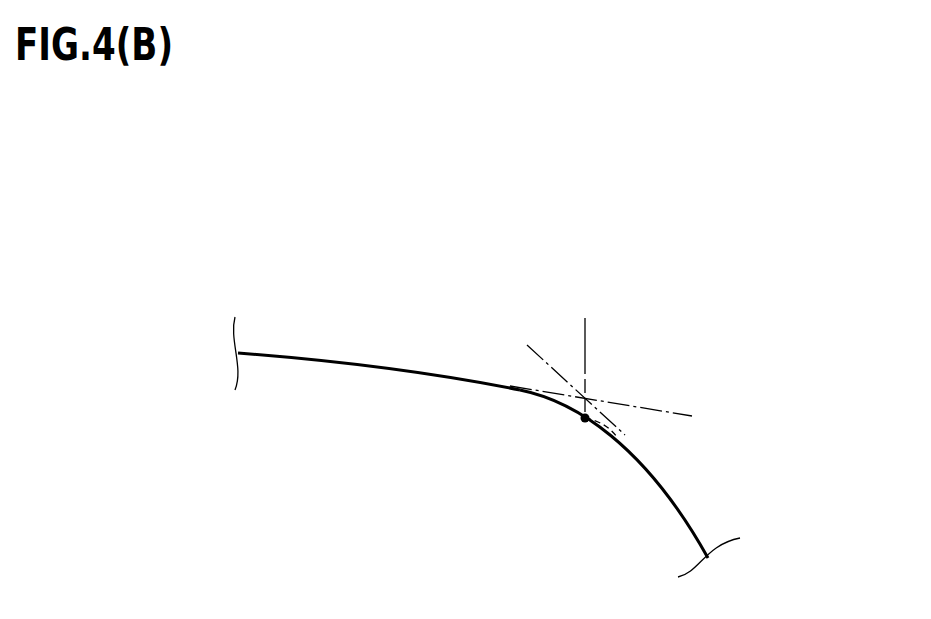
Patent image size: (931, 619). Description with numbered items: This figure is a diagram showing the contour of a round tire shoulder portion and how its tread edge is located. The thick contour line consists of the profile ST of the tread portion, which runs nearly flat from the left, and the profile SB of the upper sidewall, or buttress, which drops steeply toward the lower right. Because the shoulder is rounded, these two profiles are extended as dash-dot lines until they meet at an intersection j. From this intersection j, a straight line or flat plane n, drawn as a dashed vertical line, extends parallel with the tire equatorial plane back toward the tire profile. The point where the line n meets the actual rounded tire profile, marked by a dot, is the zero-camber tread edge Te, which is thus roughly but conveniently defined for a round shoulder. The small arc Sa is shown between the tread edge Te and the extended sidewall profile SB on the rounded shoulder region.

The profile of the tread portion ST is at (397, 367).
The profile of the upper sidewall SB is at (683, 512).
The straight line parallel with the tire equatorial plane n is at (585, 341).
The intersection j is at (585, 398).
The zero-camber tread edge Te is at (583, 422).
The arc surface Sa is at (613, 433).